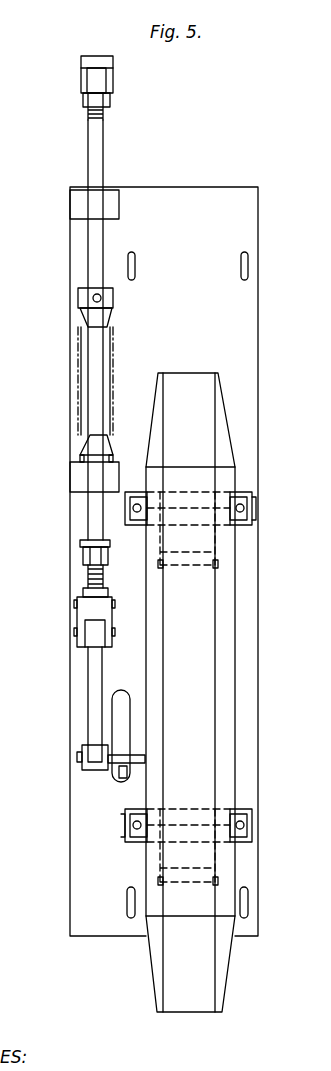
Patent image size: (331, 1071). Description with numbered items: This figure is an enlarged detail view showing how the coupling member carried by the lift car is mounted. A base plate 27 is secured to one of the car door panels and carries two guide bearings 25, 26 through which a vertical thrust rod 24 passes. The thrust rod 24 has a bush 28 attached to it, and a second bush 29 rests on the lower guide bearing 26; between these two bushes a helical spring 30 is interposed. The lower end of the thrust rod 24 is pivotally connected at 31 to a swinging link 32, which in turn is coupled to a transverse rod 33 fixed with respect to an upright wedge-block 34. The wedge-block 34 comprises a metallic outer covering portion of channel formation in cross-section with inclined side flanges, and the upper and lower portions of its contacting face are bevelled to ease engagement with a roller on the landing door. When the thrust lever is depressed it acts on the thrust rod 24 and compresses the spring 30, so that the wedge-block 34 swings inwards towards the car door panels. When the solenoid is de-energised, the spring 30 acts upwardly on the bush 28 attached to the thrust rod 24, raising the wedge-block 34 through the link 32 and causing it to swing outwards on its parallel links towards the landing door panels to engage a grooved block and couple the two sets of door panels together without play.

The thrust rod 24 is at (88, 140).
The guide bearing 25 is at (72, 205).
The guide bearing 26 is at (72, 478).
The base plate 27 is at (257, 350).
The bush 28 is at (78, 297).
The bush 29 is at (80, 447).
The helical spring 30 is at (80, 311).
The pivotal connection 31 is at (77, 635).
The swinging link 32 is at (88, 683).
The transverse rod 33 is at (120, 770).
The wedge-block 34 is at (165, 692).